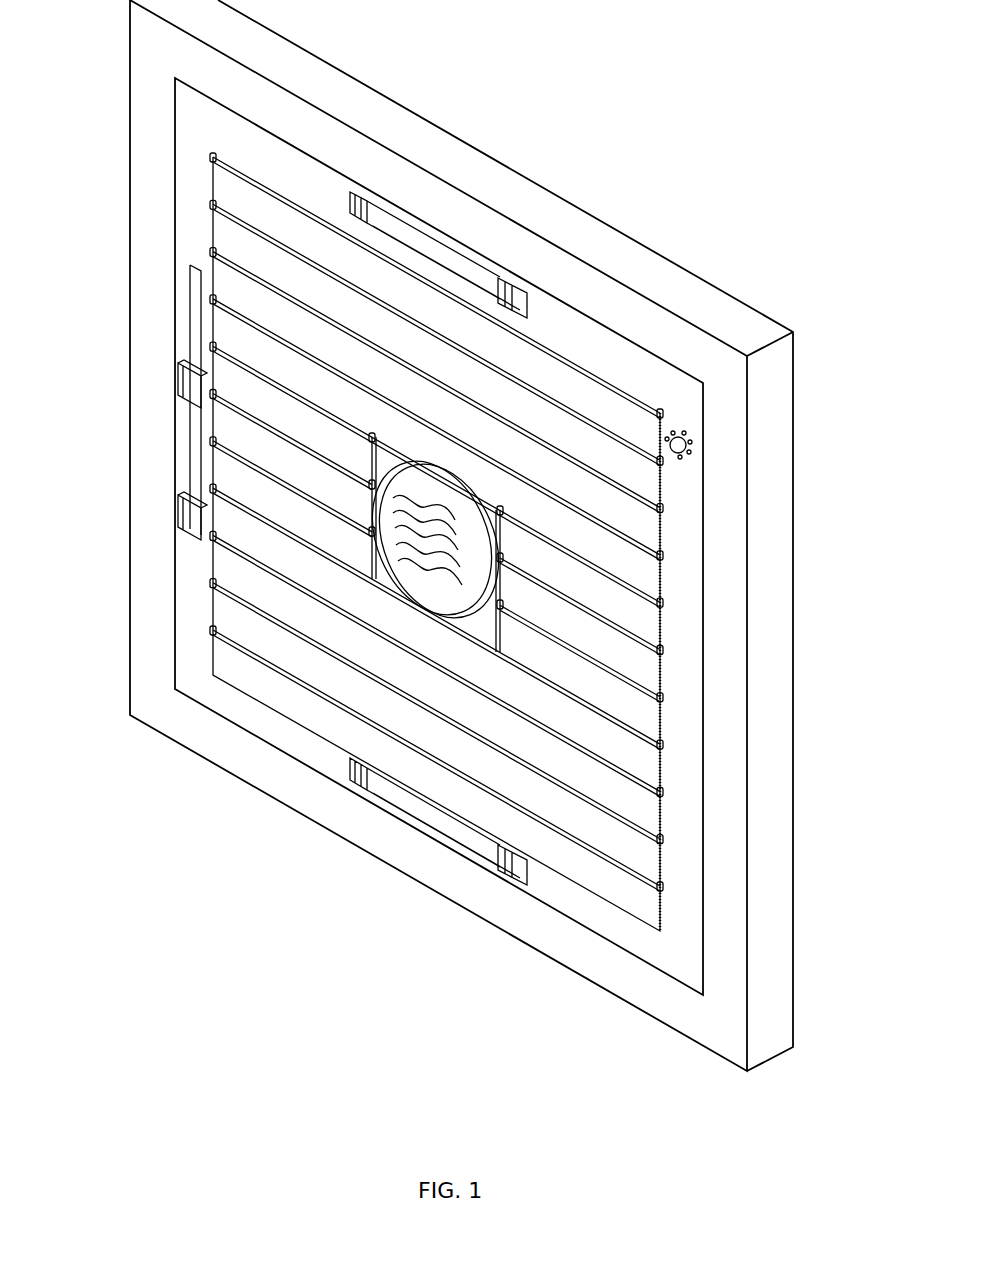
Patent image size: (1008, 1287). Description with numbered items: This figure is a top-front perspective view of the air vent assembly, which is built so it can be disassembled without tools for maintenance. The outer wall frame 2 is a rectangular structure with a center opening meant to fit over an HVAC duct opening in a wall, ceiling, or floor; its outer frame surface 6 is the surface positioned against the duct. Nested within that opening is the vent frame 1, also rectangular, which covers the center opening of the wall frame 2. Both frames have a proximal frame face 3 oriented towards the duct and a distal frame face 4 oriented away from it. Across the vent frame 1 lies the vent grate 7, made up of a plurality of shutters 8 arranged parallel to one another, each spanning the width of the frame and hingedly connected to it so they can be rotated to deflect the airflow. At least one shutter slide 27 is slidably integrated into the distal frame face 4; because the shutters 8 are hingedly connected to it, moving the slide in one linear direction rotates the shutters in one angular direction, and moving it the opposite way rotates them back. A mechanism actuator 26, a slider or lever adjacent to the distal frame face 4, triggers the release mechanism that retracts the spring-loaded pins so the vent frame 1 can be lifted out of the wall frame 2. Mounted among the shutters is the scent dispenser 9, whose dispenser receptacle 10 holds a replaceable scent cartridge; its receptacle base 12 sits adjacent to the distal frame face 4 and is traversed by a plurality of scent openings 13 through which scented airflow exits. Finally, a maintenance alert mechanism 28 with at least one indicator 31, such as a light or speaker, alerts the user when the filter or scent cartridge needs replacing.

The vent frame 1 is at (417, 536).
The wall frame 2 is at (461, 535).
The proximal frame face 3 is at (796, 410).
The distal frame face 4 is at (182, 136).
The outer frame surface 6 is at (778, 738).
The vent grate 7 is at (457, 560).
The plurality of shutters 8 is at (648, 668).
The scent dispenser 9 is at (443, 543).
The dispenser receptacle 10 is at (488, 578).
The receptacle base 12 is at (414, 590).
The plurality of scent openings 13 is at (428, 512).
The mechanism actuator 26 is at (520, 300).
The shutter slide 27 is at (180, 366).
The maintenance alert mechanism 28 is at (704, 452).
The indicator 31 is at (684, 456).